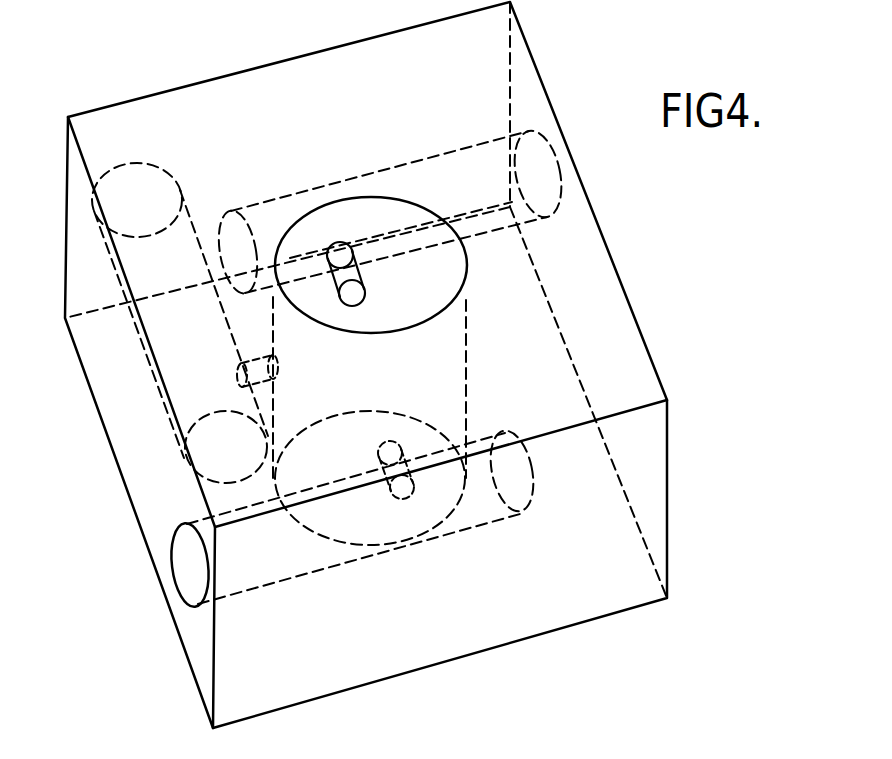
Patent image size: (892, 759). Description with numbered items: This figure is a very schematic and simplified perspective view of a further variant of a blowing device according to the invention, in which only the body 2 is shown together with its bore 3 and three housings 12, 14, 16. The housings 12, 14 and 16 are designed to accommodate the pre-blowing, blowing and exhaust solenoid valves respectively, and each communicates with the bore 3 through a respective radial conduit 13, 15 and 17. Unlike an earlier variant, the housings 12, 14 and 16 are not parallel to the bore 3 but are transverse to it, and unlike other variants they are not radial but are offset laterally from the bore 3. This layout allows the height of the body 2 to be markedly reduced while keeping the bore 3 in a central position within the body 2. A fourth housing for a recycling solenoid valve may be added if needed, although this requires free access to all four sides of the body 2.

The body 2 is at (627, 618).
The bore 3 is at (480, 371).
The housing 12 is at (187, 568).
The radial conduit 13 is at (403, 490).
The housing 14 is at (113, 165).
The radial conduit 15 is at (236, 375).
The housing 16 is at (290, 195).
The radial conduit 17 is at (357, 298).